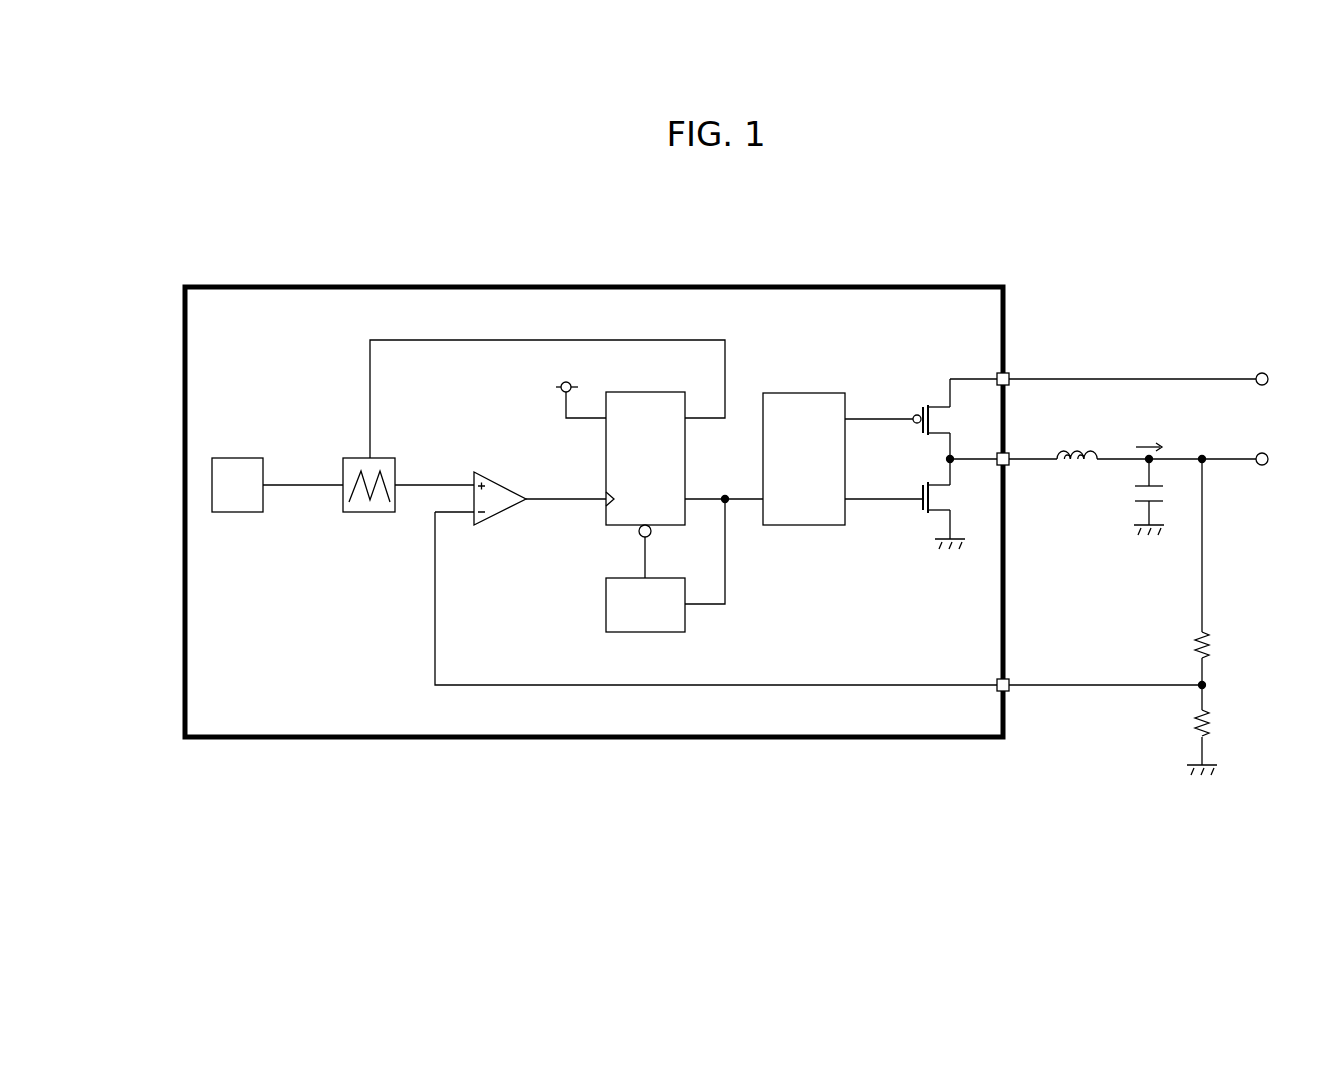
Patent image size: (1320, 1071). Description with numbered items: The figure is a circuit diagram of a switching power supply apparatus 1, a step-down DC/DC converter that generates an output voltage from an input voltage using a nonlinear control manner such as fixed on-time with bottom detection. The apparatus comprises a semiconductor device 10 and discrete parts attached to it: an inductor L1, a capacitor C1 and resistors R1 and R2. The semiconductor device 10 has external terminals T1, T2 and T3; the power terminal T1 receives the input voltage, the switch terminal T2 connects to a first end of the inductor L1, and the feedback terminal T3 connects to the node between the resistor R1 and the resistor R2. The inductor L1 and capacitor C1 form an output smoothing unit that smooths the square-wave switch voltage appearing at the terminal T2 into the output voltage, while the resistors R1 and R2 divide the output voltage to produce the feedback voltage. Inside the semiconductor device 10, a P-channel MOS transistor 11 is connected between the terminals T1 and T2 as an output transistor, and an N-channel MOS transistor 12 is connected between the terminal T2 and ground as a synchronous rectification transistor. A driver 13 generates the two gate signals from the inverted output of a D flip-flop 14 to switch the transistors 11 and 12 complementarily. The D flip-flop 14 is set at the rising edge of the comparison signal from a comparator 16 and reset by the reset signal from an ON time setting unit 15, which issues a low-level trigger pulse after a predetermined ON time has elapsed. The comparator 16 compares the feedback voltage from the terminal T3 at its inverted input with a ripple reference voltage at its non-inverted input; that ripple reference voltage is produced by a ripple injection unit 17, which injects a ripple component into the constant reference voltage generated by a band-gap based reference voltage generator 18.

The switching power supply apparatus 1 is at (166, 246).
The semiconductor device 10 is at (595, 285).
The P-channel type MOS field effect transistor 11 is at (959, 422).
The N-channel type MOS field effect transistor 12 is at (959, 500).
The driver 13 is at (807, 391).
The D flip-flop 14 is at (649, 391).
The ON time setting unit 15 is at (673, 578).
The comparator 16 is at (499, 516).
The ripple injection unit 17 is at (388, 459).
The reference voltage generator 18 is at (238, 459).
The inductor L1 is at (1077, 446).
The capacitor C1 is at (1133, 492).
The resistor R1 is at (1221, 647).
The resistor R2 is at (1221, 727).
The external terminal T1 is at (1010, 375).
The external terminal T2 is at (1010, 468).
The external terminal T3 is at (1010, 694).